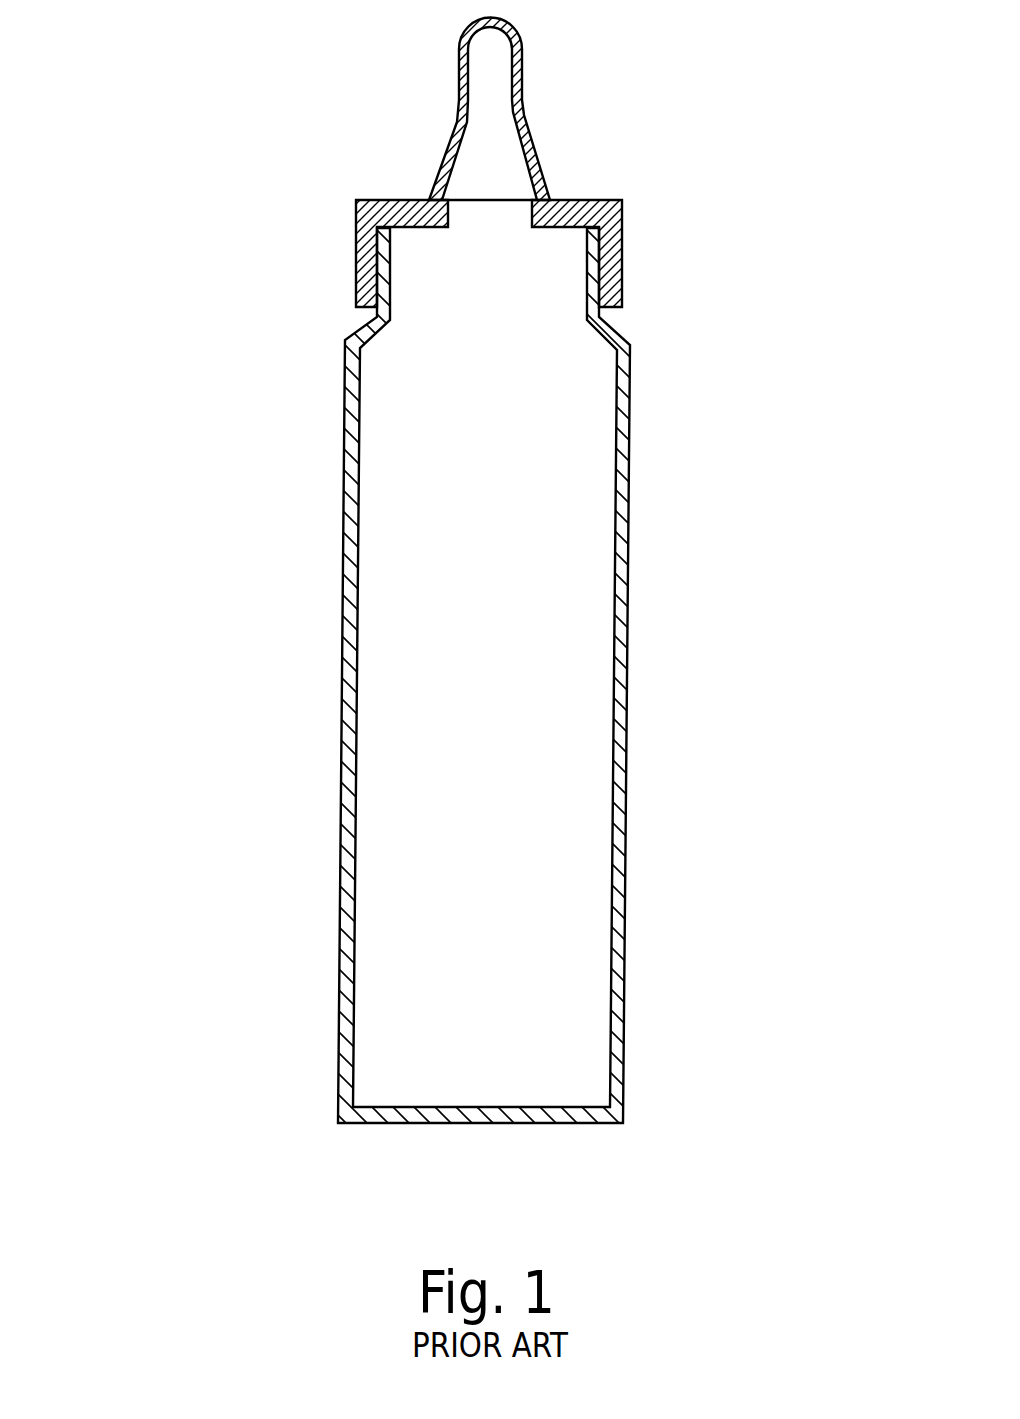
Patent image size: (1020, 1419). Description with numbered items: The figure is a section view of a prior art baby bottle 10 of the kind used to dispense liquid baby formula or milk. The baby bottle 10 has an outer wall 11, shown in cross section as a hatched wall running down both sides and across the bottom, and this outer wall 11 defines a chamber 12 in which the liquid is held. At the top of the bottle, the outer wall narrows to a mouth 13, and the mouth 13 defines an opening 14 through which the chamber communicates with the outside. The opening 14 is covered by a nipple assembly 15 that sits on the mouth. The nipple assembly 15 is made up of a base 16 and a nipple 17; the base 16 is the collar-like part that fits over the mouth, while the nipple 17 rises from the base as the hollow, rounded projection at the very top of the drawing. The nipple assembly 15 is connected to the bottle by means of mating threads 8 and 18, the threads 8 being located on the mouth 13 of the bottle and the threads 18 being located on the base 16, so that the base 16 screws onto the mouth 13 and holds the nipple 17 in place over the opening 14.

The baby bottle 10 is at (226, 682).
The outer wall 11 is at (628, 605).
The chamber 12 is at (408, 538).
The mouth 13 is at (592, 258).
The opening 14 is at (480, 222).
The nipple assembly 15 is at (560, 200).
The base 16 is at (622, 227).
The nipple 17 is at (523, 48).
The mating threads 8 is at (482, 266).
The mating threads 18 is at (566, 253).